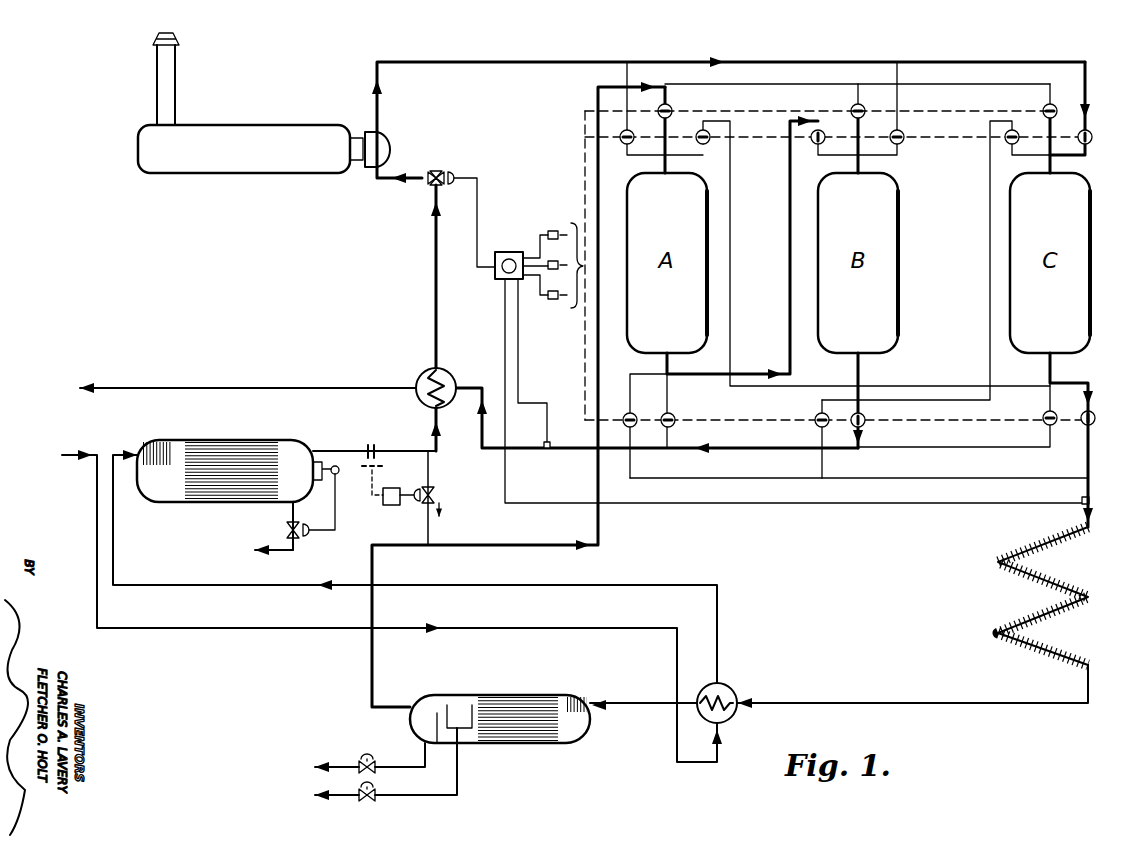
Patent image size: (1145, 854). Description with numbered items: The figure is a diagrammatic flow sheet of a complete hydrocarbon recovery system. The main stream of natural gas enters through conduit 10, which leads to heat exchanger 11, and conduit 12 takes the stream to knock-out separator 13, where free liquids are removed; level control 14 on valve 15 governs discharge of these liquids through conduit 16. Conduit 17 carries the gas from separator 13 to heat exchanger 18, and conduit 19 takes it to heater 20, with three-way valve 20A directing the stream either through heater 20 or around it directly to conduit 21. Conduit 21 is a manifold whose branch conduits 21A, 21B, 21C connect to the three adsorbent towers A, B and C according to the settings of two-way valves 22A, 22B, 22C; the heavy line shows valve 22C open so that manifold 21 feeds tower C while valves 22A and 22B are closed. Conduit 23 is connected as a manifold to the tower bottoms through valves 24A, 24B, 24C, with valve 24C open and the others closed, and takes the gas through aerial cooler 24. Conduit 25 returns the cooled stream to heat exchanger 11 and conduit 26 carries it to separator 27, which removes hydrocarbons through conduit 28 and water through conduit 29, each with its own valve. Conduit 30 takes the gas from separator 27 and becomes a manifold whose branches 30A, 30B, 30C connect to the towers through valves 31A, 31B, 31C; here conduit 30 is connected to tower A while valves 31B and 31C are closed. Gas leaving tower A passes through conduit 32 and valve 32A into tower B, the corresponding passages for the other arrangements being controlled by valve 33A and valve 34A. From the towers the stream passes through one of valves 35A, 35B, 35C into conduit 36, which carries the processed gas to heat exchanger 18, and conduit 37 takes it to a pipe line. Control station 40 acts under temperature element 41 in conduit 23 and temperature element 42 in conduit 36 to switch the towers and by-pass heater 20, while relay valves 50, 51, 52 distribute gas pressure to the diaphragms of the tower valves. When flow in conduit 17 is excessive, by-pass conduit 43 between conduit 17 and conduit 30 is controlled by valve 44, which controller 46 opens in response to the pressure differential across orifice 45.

The conduit 10 is at (95, 505).
The heat exchanger 11 is at (731, 687).
The conduit 12 is at (622, 585).
The knock-out separator 13 is at (211, 440).
The level control 14 is at (333, 476).
The valve 15 is at (284, 531).
The conduit 16 is at (291, 552).
The conduit 17 is at (322, 451).
The heat exchanger 18 is at (422, 370).
The conduit 19 is at (436, 272).
The heater 20 is at (252, 125).
The three-way valve 20A is at (439, 174).
The manifold conduit 21 is at (504, 62).
The branch conduit 21A is at (620, 73).
The branch conduit 21B is at (893, 70).
The branch conduit 21C is at (1082, 70).
The two-way valve 22A is at (624, 145).
The two-way valve 22B is at (900, 145).
The two-way valve 22C is at (1090, 144).
The conduit 23 is at (1092, 486).
The aerial cooler 24 is at (1108, 579).
The valve 24A is at (632, 413).
The valve 24B is at (816, 414).
The valve 24C is at (1095, 414).
The conduit 25 is at (947, 705).
The conduit 26 is at (658, 701).
The separator 27 is at (565, 695).
The conduit 28 is at (420, 796).
The conduit 29 is at (405, 765).
The conduit 30 is at (598, 96).
The branch conduit 30A is at (672, 101).
The branch conduit 30B is at (854, 97).
The branch conduit 30C is at (1045, 96).
The valve 31A is at (668, 116).
The valve 31B is at (862, 116).
The valve 31C is at (1053, 115).
The conduit 32 is at (790, 286).
The valve 32A is at (815, 145).
The valve 33A is at (1010, 145).
The valve 34A is at (707, 145).
The valve 35A is at (673, 414).
The valve 35B is at (866, 425).
The valve 35C is at (1044, 423).
The conduit 36 is at (563, 455).
The conduit 37 is at (226, 387).
The control station 40 is at (498, 252).
The temperature element 41 is at (1082, 504).
The temperature element 42 is at (544, 442).
The conduit 43 is at (430, 528).
The valve 44 is at (425, 488).
The orifice 45 is at (376, 446).
The controller 46 is at (395, 505).
The relay valve 50 is at (556, 231).
The relay valve 51 is at (556, 261).
The relay valve 52 is at (552, 300).